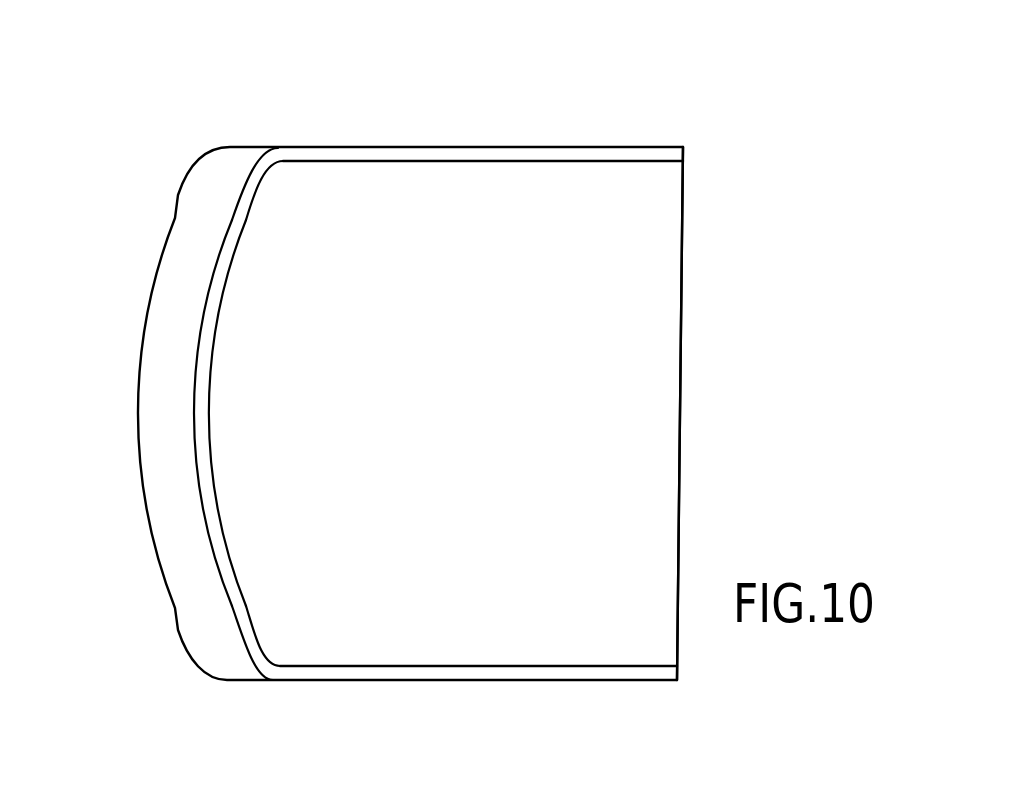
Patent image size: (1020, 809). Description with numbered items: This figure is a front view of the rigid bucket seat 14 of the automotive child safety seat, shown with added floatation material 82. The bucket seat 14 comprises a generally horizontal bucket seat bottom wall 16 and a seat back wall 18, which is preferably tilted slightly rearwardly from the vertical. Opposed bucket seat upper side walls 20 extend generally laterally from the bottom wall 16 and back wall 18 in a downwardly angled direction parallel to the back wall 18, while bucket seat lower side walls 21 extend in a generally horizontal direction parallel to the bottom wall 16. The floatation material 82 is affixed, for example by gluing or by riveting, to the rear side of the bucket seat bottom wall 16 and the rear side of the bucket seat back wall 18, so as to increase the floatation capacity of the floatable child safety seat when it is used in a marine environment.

The bucket seat 14 is at (462, 415).
The bucket seat bottom wall 16 is at (657, 428).
The seat back wall 18 is at (198, 383).
The bucket seat upper side walls 20 is at (285, 153).
The bucket seat lower side walls 21 is at (565, 153).
The floatation material 82 is at (157, 398).